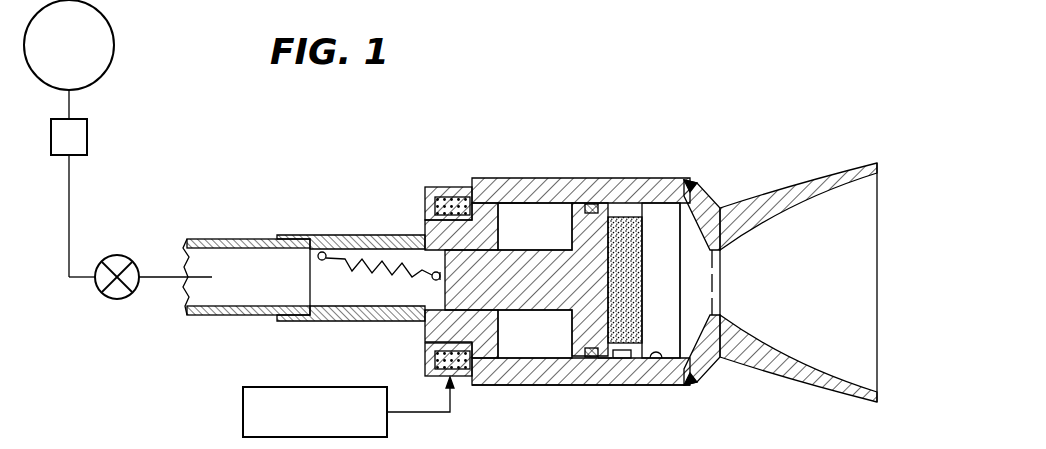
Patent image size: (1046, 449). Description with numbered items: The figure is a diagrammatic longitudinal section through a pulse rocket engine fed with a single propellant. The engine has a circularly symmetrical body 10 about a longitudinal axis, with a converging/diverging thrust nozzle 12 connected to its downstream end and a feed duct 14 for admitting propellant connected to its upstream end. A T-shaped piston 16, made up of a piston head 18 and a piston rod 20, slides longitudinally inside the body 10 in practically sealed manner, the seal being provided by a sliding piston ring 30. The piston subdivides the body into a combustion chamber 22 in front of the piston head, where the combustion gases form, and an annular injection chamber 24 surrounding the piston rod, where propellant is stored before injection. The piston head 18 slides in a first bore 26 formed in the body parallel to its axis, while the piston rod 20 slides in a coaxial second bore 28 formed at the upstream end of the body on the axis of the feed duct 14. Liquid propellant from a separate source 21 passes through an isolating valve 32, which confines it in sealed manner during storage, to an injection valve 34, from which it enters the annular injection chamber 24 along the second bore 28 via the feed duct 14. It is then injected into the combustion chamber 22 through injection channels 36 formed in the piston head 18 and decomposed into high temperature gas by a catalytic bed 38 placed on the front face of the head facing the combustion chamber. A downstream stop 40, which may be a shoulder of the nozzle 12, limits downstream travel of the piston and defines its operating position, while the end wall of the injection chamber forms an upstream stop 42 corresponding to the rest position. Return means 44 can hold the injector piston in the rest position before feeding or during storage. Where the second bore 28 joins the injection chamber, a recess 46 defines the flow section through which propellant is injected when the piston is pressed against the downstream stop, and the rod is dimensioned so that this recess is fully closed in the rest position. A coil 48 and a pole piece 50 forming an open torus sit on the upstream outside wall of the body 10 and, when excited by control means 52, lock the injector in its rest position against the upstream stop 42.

The body 10 is at (590, 178).
The converging/diverging thrust nozzle 12 is at (782, 190).
The feed duct 14 is at (228, 239).
The T-shaped piston 16 is at (654, 259).
The piston head 18 is at (607, 360).
The piston rod 20 is at (419, 237).
The source 21 is at (113, 24).
The combustion chamber 22 is at (676, 288).
The annular injection chamber 24 is at (545, 220).
The first bore 26 is at (683, 387).
The second bore 28 is at (352, 322).
The sliding piston ring 30 is at (590, 370).
The isolating valve 32 is at (78, 135).
The injection valve 34 is at (117, 289).
The injection channels 36 is at (607, 300).
The catalytic bed 38 is at (630, 217).
The downstream stop 40 is at (641, 373).
The upstream stop 42 is at (512, 210).
The return means 44 is at (380, 275).
The recess 46 is at (433, 288).
The coil 48 is at (428, 208).
The pole piece 50 is at (450, 187).
The control means 52 is at (265, 387).